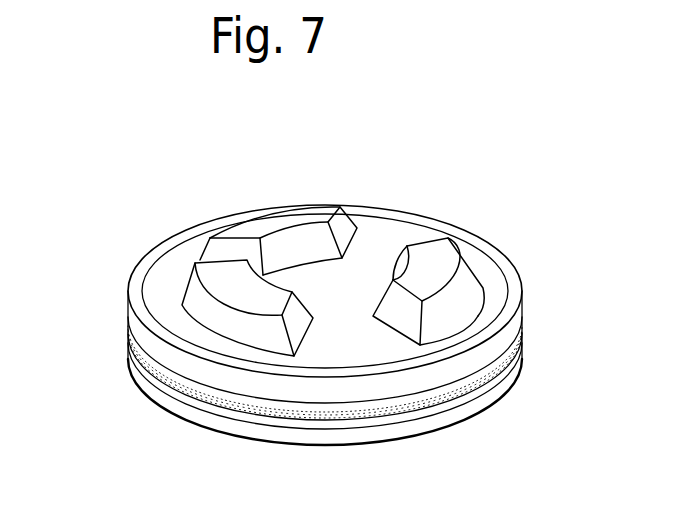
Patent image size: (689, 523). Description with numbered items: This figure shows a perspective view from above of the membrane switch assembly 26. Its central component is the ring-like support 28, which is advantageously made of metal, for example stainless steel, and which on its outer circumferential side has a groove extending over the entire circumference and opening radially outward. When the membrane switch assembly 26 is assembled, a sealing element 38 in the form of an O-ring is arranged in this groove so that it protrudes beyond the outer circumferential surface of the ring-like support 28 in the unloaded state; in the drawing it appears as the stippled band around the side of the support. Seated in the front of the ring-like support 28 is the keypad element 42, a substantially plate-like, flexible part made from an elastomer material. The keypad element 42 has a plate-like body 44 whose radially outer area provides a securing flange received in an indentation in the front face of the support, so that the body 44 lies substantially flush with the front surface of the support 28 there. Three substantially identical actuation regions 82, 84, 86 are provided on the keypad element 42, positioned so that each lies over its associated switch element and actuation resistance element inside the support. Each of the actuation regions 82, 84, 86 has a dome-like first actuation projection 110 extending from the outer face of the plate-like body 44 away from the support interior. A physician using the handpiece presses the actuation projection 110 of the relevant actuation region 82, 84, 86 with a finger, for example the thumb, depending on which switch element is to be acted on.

The membrane switch assembly 26 is at (505, 150).
The ring-like support 28 is at (417, 437).
The sealing element 38 is at (495, 401).
The keypad element 42 is at (483, 271).
The plate-like body 44 is at (327, 343).
The actuation region 82 is at (258, 213).
The actuation region 84 is at (215, 308).
The actuation region 86 is at (458, 294).
The first actuation projection 110 is at (345, 192).